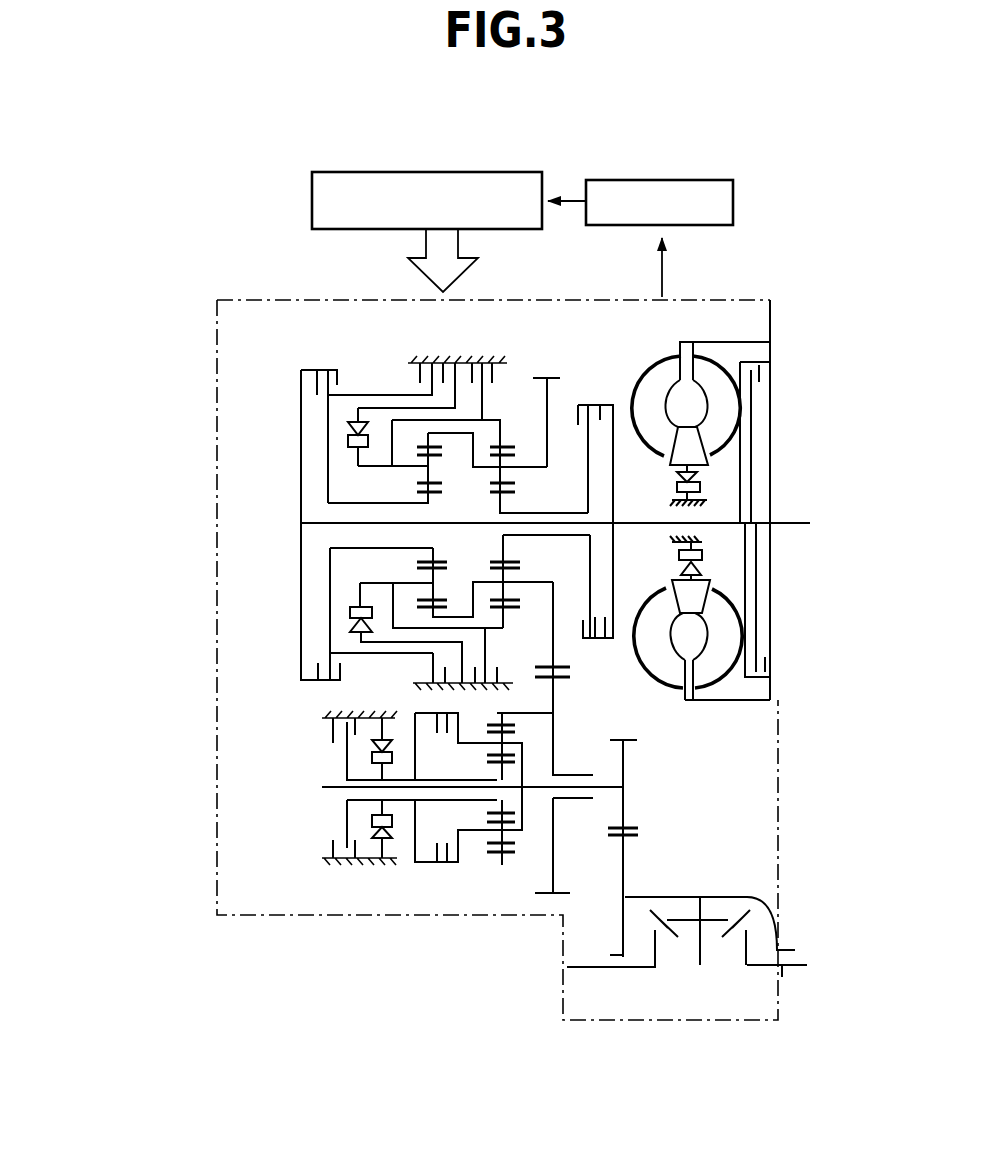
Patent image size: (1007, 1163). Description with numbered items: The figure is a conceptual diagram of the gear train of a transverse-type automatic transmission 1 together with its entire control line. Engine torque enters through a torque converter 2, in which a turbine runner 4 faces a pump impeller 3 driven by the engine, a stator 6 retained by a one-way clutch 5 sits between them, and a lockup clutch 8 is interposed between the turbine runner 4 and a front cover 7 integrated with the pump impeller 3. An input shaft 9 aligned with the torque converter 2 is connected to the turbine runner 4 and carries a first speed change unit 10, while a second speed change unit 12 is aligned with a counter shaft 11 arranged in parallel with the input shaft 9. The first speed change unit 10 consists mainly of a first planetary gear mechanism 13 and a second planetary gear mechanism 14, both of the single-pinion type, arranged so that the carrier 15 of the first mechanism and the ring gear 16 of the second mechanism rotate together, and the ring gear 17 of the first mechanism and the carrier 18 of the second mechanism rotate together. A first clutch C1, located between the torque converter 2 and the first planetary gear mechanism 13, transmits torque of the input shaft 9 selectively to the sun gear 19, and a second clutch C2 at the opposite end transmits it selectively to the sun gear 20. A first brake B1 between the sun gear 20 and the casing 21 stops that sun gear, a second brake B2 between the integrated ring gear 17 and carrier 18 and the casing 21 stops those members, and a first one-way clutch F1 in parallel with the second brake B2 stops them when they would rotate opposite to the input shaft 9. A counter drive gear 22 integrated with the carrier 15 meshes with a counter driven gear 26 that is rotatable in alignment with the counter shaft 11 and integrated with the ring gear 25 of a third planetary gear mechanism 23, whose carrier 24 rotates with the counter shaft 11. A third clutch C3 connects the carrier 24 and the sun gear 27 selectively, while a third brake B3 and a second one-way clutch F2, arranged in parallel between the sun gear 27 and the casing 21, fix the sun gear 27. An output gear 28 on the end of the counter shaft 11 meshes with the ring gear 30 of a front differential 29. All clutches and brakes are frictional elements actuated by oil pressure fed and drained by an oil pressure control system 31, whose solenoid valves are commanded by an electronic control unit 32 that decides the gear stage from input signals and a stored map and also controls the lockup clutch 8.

The automatic transmission 1 is at (214, 479).
The torque converter 2 is at (689, 706).
The pump impeller 3 is at (662, 363).
The turbine runner 4 is at (712, 668).
The one-way clutch 5 is at (677, 485).
The stator 6 is at (710, 585).
The front cover 7 is at (770, 430).
The lockup clutch 8 is at (758, 368).
The input shaft 9 is at (645, 522).
The first speed change unit 10 is at (291, 644).
The counter shaft 11 is at (347, 785).
The second speed change unit 12 is at (261, 815).
The first planetary gear mechanism 13 is at (507, 398).
The second planetary gear mechanism 14 is at (406, 438).
The carrier 15 is at (530, 468).
The ring gear 16 is at (420, 612).
The ring gear 17 is at (516, 444).
The carrier 18 is at (410, 583).
The sun gear 19 is at (513, 488).
The sun gear 20 is at (434, 556).
The casing 21 is at (458, 362).
The counter drive gear 22 is at (562, 665).
The third planetary gear mechanism 23 is at (482, 877).
The carrier 24 is at (515, 836).
The ring gear 25 is at (497, 858).
The counter driven gear 26 is at (555, 697).
The sun gear 27 is at (493, 767).
The output gear 28 is at (632, 828).
The front differential 29 is at (711, 886).
The ring gear 30 is at (632, 840).
The oil pressure control system 31 is at (437, 172).
The electronic control unit 32 is at (662, 180).
The first brake B1 is at (413, 375).
The second brake B2 is at (512, 373).
The third brake B3 is at (337, 849).
The first clutch C1 is at (600, 405).
The second clutch C2 is at (328, 370).
The third clutch C3 is at (468, 805).
The first one-way clutch F1 is at (353, 454).
The second one-way clutch F2 is at (392, 834).